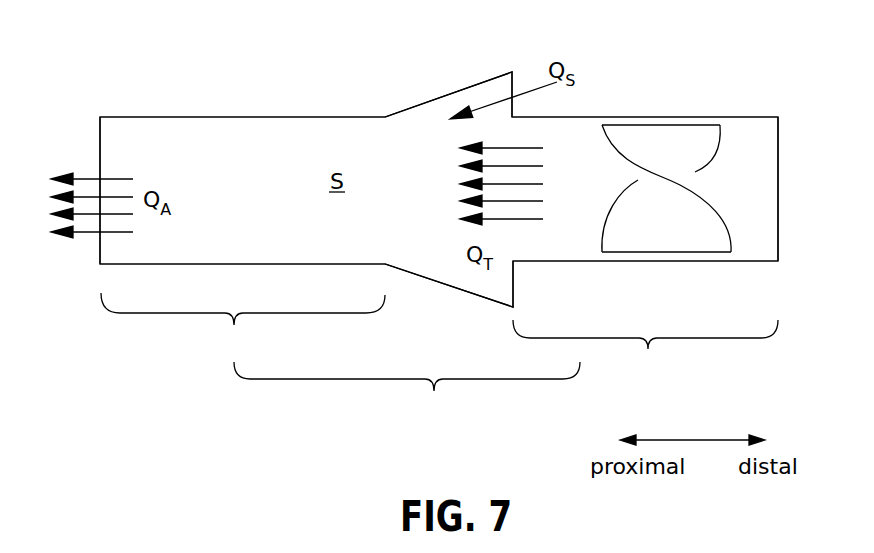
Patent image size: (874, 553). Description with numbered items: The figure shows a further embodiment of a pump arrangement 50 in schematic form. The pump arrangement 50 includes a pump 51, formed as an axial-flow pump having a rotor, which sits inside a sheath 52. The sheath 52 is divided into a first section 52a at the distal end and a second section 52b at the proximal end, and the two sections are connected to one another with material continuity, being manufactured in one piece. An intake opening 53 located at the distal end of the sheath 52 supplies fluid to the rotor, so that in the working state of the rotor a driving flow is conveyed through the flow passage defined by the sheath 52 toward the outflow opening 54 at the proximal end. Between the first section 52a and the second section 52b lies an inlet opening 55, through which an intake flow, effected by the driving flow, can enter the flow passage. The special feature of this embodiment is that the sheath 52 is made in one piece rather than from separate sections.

The pump arrangement 50 is at (305, 90).
The pump 51 is at (672, 140).
The sheath 52 is at (407, 391).
The first section 52a is at (645, 349).
The second section 52b is at (243, 324).
The intake opening 53 is at (806, 158).
The outflow opening 54 is at (85, 152).
The inlet opening 55 is at (492, 78).